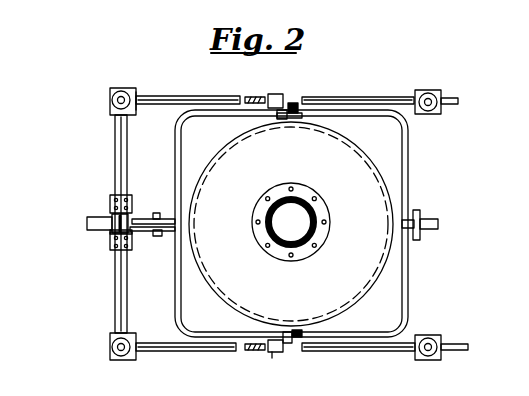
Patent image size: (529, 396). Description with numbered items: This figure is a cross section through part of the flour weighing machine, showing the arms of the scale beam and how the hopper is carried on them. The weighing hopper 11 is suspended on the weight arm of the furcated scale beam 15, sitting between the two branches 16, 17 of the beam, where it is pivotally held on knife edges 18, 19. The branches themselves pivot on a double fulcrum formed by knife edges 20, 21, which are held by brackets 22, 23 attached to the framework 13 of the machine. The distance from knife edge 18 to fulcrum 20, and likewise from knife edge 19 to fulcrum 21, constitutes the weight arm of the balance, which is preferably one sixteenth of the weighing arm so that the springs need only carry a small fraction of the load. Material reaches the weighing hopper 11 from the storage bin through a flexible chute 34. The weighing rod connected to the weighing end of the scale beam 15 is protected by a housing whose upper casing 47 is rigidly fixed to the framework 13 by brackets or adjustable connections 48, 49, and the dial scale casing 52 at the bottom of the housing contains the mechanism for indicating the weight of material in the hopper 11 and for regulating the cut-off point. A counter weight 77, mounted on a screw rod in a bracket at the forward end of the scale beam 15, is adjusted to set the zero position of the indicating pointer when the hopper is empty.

The weighing hopper 11 is at (373, 287).
The framework 13 is at (199, 78).
The scale beam 15 is at (408, 160).
The branch of the scale beam 16 is at (360, 338).
The branch of the scale beam 17 is at (364, 107).
The knife edge 18 is at (293, 345).
The knife edge 19 is at (297, 104).
The knife edge 20 is at (271, 357).
The knife edge 21 is at (278, 94).
The bracket 22 is at (252, 352).
The bracket 23 is at (257, 97).
The chute 34 is at (312, 239).
The upper casing 47 is at (110, 242).
The bracket 48 is at (110, 204).
The bracket 49 is at (113, 252).
The dial scale casing 52 is at (90, 225).
The counter weight 77 is at (158, 237).